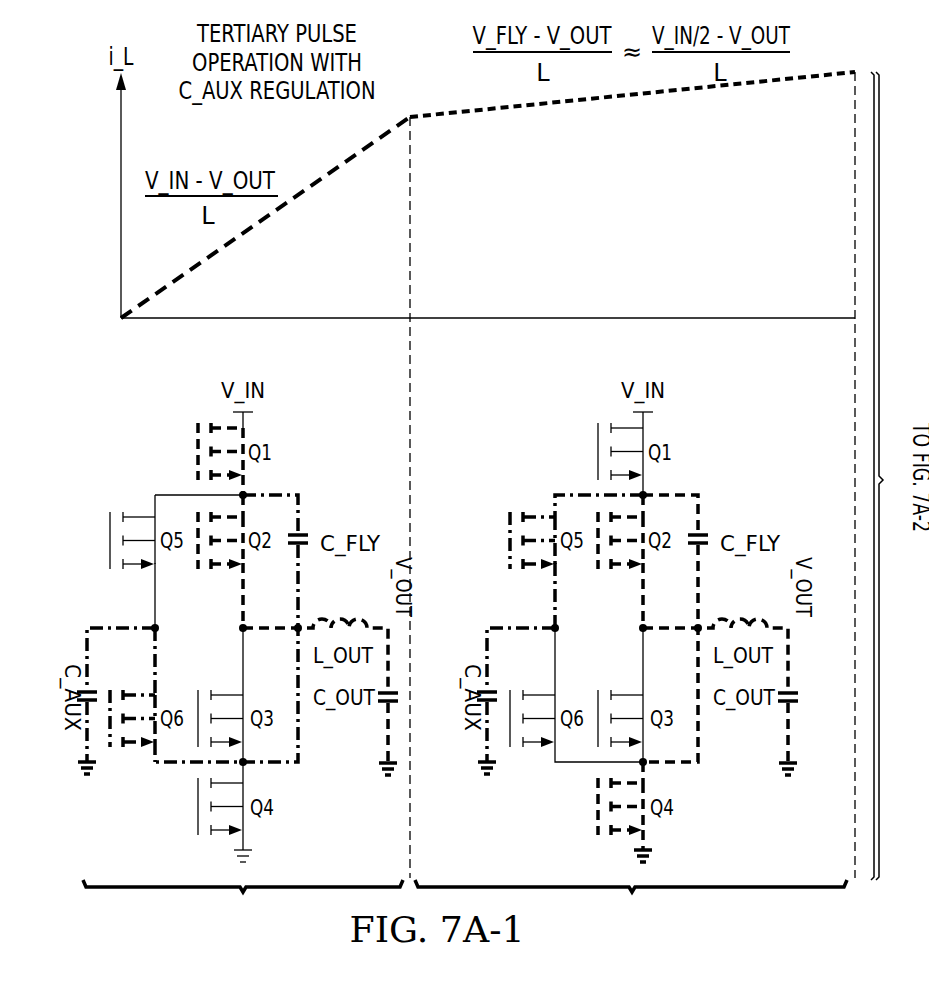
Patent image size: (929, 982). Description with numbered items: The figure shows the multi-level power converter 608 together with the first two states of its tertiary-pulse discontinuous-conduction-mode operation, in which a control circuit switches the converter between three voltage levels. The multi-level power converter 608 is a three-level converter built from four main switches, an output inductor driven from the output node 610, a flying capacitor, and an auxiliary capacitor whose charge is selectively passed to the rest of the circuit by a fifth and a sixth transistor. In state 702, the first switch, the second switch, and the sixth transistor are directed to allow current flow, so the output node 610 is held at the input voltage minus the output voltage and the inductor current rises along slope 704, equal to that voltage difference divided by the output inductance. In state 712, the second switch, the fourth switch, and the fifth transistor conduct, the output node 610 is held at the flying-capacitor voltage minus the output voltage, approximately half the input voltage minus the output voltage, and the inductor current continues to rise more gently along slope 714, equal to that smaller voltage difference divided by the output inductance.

The multi-level power converter 608 is at (453, 653).
The output node 610 is at (242, 636).
The state 702 is at (237, 654).
The slope 704 is at (253, 226).
The state 712 is at (631, 653).
The slope 714 is at (627, 96).